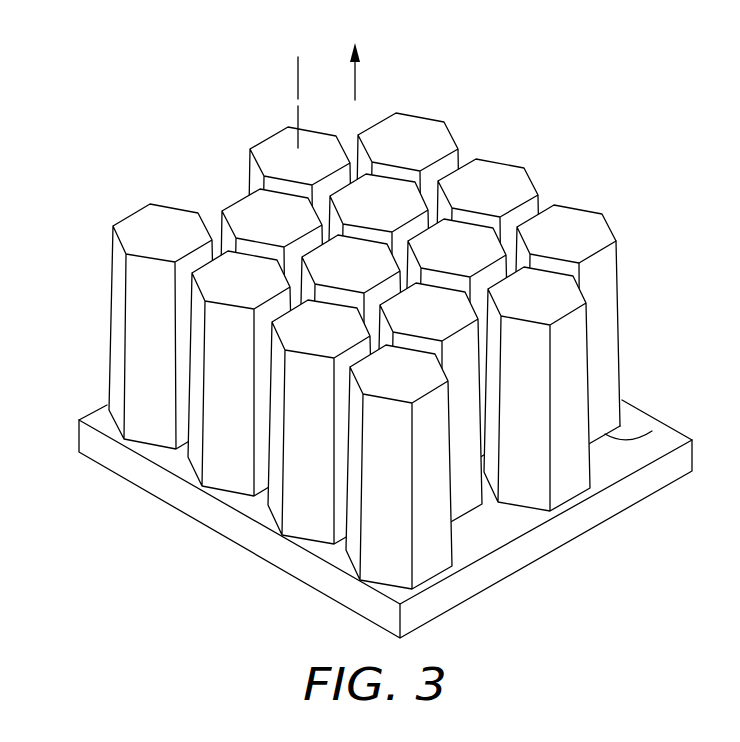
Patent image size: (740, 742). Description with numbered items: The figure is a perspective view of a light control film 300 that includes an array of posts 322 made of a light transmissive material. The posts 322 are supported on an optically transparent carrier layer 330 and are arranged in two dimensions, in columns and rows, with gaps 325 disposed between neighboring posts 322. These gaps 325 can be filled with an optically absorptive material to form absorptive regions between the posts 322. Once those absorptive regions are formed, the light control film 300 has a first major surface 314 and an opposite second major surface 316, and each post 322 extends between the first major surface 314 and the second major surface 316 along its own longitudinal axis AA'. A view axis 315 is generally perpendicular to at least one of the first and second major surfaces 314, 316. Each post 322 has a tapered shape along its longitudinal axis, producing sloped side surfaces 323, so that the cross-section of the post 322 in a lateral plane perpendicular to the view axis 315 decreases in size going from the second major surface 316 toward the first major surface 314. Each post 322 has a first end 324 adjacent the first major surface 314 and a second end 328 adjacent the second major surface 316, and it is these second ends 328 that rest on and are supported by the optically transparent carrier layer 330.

The light control film 300 is at (363, 324).
The first major surface 314 is at (128, 215).
The view axis 315 is at (359, 55).
The second major surface 316 is at (352, 501).
The posts 322 is at (622, 256).
The sloped side surfaces 323 is at (602, 315).
The first end 324 is at (609, 298).
The gaps 325 is at (463, 157).
The second end 328 is at (656, 428).
The optically transparent carrier layer 330 is at (643, 483).